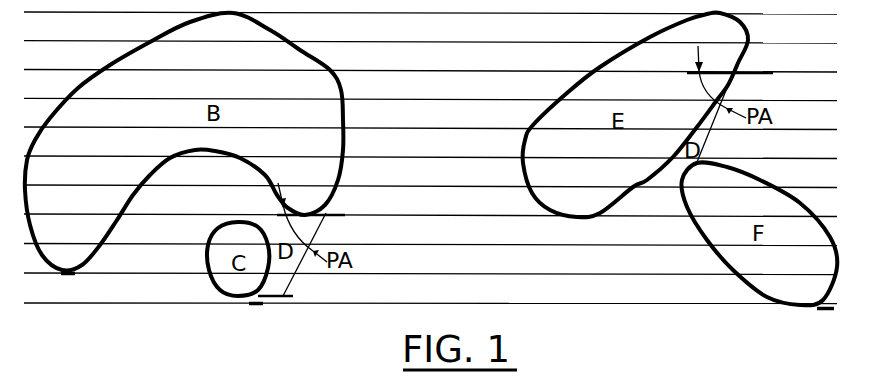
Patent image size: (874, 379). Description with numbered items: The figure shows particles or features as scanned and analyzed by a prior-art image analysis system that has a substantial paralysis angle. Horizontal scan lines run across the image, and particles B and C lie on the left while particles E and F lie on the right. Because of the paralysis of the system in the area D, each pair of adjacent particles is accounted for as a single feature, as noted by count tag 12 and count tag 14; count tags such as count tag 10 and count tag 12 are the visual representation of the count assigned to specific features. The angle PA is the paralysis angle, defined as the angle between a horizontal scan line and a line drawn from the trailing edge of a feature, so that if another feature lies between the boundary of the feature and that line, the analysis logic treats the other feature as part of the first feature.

The count tag 10 is at (70, 276).
The count tag 12 is at (256, 306).
The count tag 14 is at (826, 311).